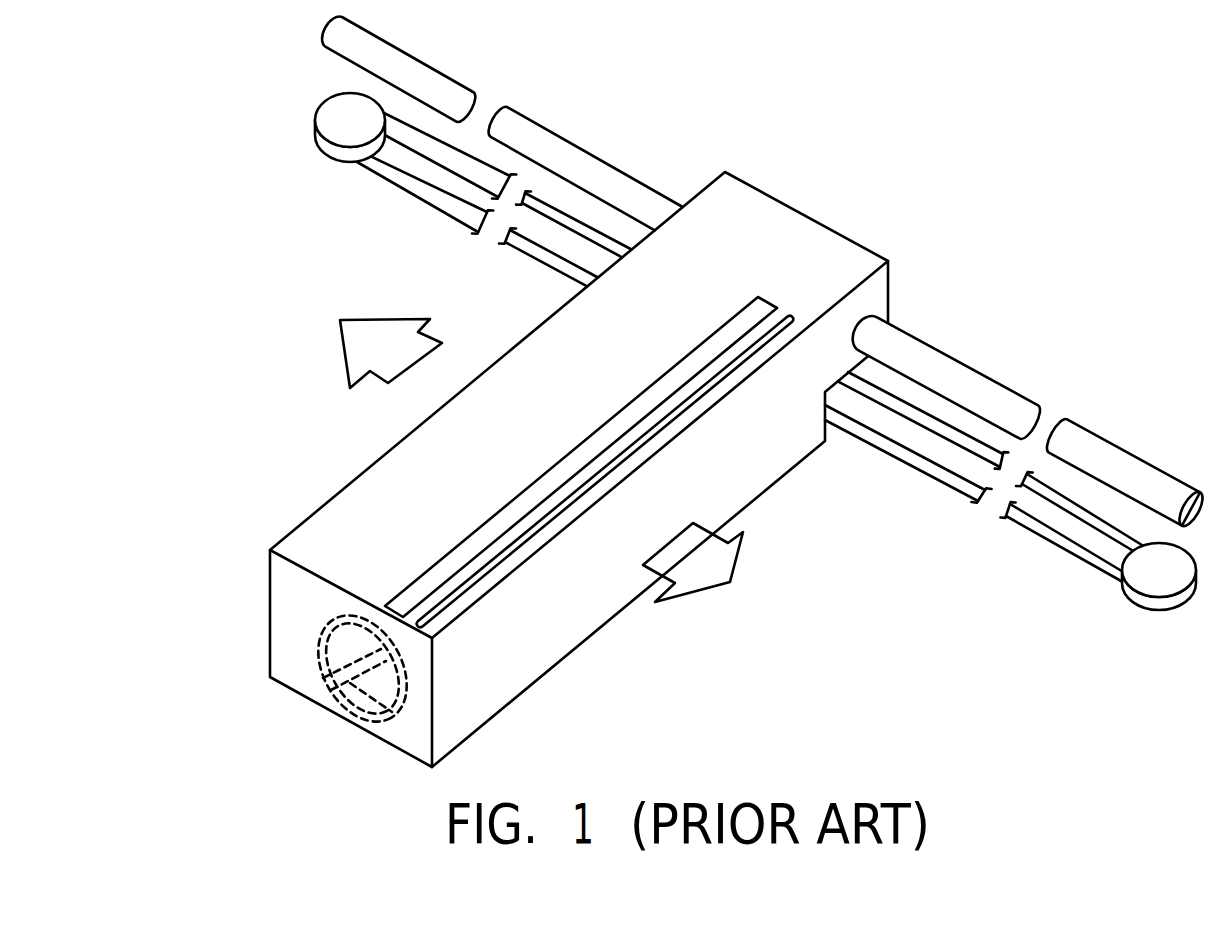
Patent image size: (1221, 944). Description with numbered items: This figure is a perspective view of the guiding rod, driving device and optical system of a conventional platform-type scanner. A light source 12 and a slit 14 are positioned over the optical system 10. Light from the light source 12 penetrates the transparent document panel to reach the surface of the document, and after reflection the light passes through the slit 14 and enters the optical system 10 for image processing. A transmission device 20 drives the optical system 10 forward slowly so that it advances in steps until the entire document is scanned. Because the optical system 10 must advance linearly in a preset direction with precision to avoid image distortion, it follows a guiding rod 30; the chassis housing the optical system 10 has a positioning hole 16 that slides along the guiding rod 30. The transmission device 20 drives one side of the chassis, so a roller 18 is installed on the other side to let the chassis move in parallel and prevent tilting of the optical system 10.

The optical system 10 is at (345, 453).
The light source 12 is at (428, 590).
The slit 14 is at (478, 574).
The positioning hole 16 is at (868, 314).
The roller 18 is at (320, 665).
The transmission device 20 is at (1122, 617).
The guiding rod 30 is at (965, 373).